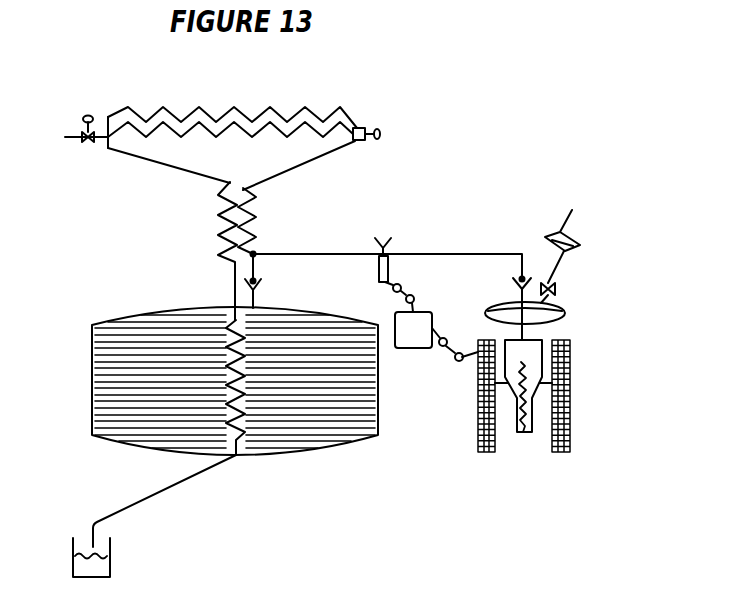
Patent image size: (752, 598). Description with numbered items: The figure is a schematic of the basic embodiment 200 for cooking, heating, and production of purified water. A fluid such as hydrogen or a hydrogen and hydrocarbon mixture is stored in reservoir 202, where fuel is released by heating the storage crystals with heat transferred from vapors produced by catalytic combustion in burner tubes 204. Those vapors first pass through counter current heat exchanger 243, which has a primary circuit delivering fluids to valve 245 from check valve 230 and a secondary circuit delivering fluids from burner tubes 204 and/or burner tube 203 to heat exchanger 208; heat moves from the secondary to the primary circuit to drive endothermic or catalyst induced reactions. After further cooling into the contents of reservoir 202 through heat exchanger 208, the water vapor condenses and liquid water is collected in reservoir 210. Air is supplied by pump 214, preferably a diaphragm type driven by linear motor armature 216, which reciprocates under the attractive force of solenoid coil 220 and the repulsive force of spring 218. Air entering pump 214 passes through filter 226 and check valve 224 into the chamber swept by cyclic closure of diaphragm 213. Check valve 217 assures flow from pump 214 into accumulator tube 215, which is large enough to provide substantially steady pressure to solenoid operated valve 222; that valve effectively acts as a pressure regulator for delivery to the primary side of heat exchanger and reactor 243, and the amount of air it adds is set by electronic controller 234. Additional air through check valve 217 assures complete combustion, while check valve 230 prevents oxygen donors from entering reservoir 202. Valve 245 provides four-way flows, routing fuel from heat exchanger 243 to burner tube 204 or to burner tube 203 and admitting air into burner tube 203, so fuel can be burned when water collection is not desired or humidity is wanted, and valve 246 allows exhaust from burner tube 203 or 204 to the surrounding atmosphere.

The basic embodiment 200 is at (89, 71).
The reservoir 202 is at (92, 363).
The burner tube 203 is at (190, 132).
The burner tubes 204 is at (168, 110).
The heat exchanger 208 is at (222, 323).
The reservoir 210 is at (112, 566).
The diaphragm 213 is at (492, 301).
The pump 214 is at (563, 304).
The accumulator tube 215 is at (458, 252).
The linear motor armature 216 is at (535, 340).
The check valve 217 is at (517, 286).
The spring 218 is at (526, 432).
The solenoid coil 220 is at (573, 393).
The solenoid operated valve 222 is at (392, 270).
The check valve 224 is at (562, 285).
The filter 226 is at (585, 233).
The check valve 230 is at (262, 285).
The electronic controller 234 is at (403, 352).
The counter current heat exchanger 243 is at (215, 212).
The valve 245 is at (366, 128).
The valve 246 is at (86, 140).